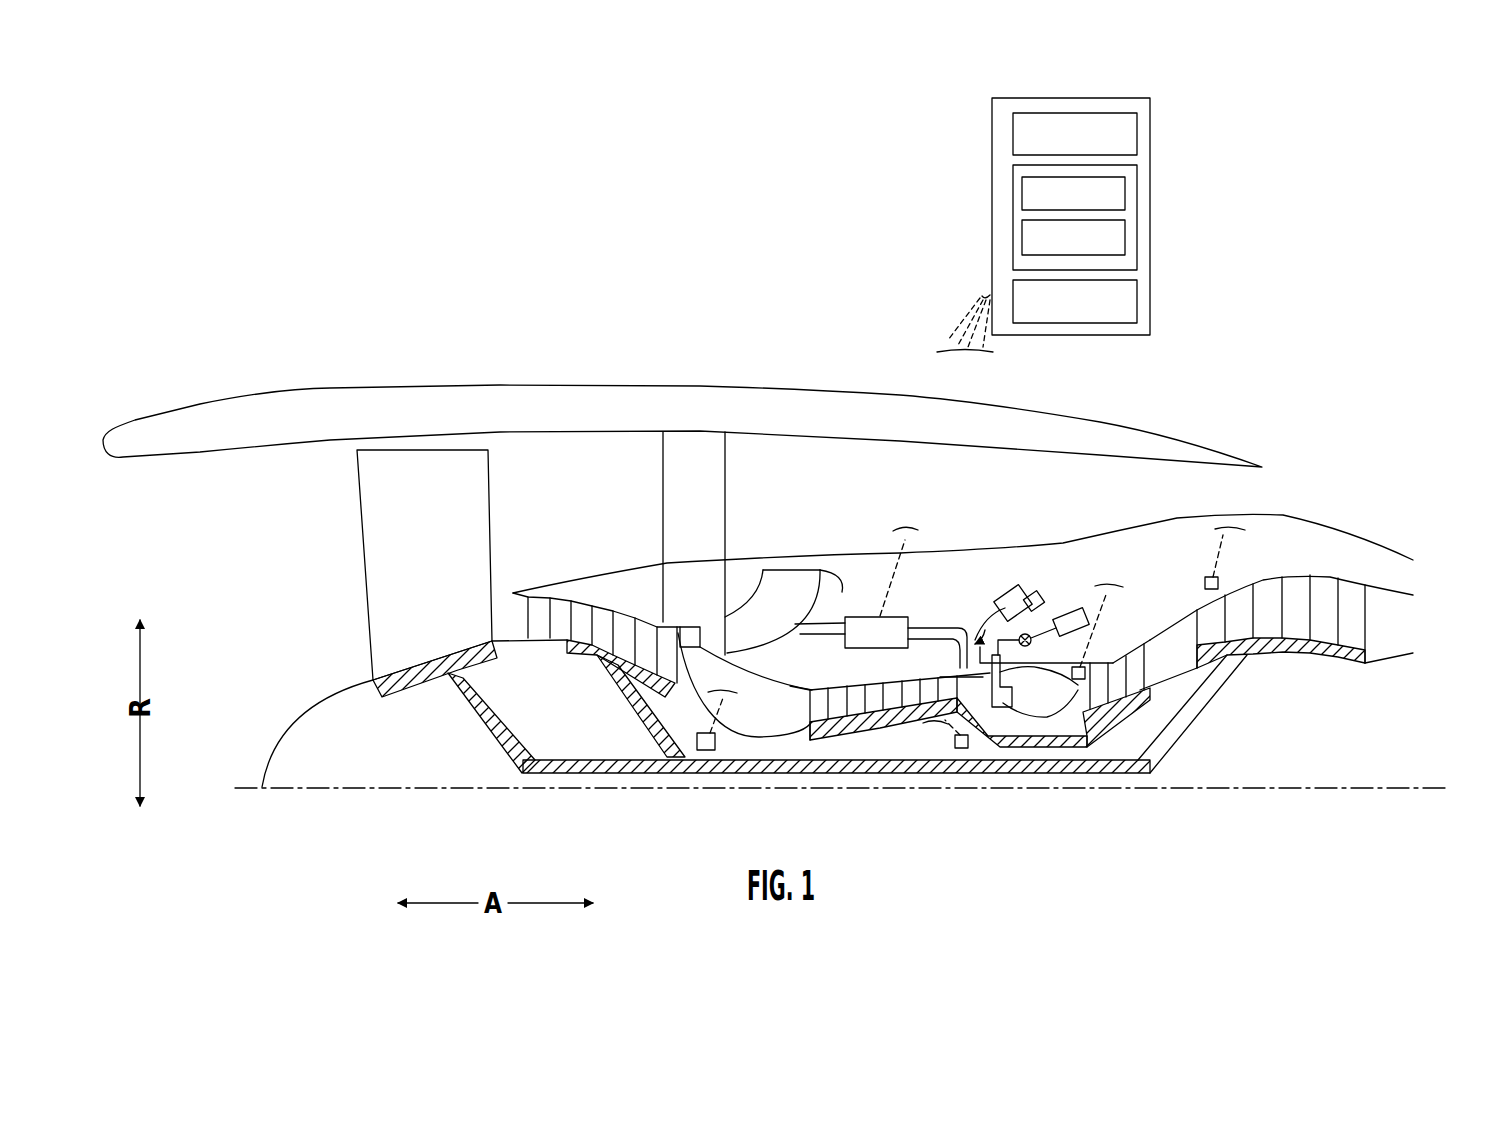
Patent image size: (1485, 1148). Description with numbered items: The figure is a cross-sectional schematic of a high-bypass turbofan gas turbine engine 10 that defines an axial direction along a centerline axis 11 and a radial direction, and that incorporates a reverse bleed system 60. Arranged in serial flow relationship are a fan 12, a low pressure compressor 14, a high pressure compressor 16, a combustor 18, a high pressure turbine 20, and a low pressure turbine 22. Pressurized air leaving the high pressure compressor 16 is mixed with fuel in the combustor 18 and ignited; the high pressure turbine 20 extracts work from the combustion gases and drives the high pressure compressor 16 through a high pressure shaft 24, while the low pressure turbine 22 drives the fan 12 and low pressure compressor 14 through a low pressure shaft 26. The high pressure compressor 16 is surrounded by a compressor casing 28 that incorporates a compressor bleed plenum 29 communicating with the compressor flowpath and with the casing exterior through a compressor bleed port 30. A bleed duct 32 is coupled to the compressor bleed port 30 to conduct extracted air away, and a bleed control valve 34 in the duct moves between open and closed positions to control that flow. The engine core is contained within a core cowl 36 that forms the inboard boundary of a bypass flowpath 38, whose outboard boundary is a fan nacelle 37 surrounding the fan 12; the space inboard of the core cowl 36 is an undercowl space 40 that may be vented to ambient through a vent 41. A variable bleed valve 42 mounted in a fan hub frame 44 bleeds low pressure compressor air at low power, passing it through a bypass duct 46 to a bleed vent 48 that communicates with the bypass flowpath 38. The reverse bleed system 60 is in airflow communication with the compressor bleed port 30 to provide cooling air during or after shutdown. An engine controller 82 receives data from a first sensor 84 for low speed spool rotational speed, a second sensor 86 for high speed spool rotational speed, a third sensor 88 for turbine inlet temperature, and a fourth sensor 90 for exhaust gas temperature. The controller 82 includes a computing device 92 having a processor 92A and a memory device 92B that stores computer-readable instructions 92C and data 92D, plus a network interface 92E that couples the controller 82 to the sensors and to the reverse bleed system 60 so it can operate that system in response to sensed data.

The gas turbine engine 10 is at (478, 207).
The centerline axis 11 is at (437, 790).
The fan 12 is at (338, 567).
The low pressure compressor 14 is at (610, 585).
The high pressure compressor 16 is at (897, 735).
The combustor 18 is at (1064, 722).
The high pressure turbine 20 is at (1150, 718).
The low pressure turbine 22 is at (1328, 560).
The high pressure shaft 24 is at (1018, 748).
The low pressure shaft 26 is at (835, 762).
The compressor casing 28 is at (907, 678).
The compressor bleed plenum 29 is at (963, 675).
The compressor bleed port 30 is at (978, 633).
The bleed duct 32 is at (1040, 590).
The bleed control valve 34 is at (1045, 613).
The core cowl 36 is at (1180, 519).
The fan nacelle 37 is at (535, 398).
The bypass flowpath 38 is at (757, 543).
The undercowl space 40 is at (1281, 595).
The vent 41 is at (1418, 562).
The variable bleed valve 42 is at (678, 626).
The fan hub frame 44 is at (728, 584).
The bypass duct 46 is at (840, 586).
The bleed vent 48 is at (793, 568).
The reverse bleed system 60 is at (896, 622).
The engine controller 82 is at (918, 166).
The first sensor 84 is at (707, 752).
The second sensor 86 is at (962, 749).
The third sensor 88 is at (1088, 667).
The fourth sensor 90 is at (1220, 584).
The computing device 92 is at (1107, 213).
The processor 92A is at (1075, 135).
The memory device 92B is at (1118, 211).
The computer-readable instructions 92C is at (1073, 193).
The data 92D is at (1073, 237).
The network interface 92E is at (1075, 301).